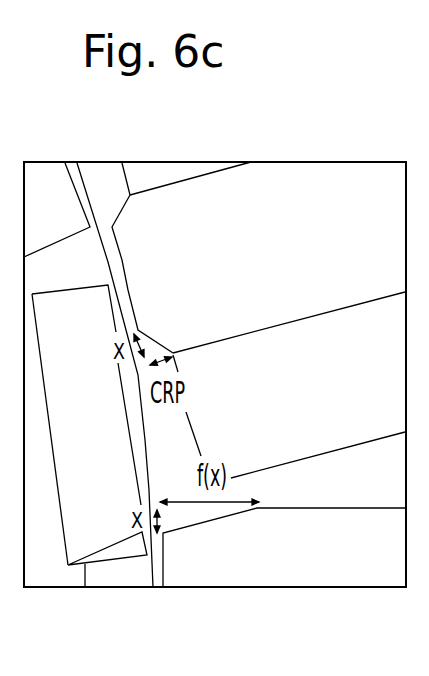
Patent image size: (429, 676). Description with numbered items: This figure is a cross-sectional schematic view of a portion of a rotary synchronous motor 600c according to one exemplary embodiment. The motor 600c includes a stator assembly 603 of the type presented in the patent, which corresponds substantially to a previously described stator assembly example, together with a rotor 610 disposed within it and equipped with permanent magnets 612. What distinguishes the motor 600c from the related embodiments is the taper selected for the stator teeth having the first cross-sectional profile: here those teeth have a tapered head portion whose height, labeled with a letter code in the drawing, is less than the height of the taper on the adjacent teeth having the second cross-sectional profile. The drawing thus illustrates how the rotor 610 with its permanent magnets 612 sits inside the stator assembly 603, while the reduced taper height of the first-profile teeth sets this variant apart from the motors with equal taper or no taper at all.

The rotary synchronous motor 600c is at (215, 354).
The stator assembly 603 is at (336, 177).
The rotor 610 is at (45, 576).
The permanent magnets 612 is at (103, 540).